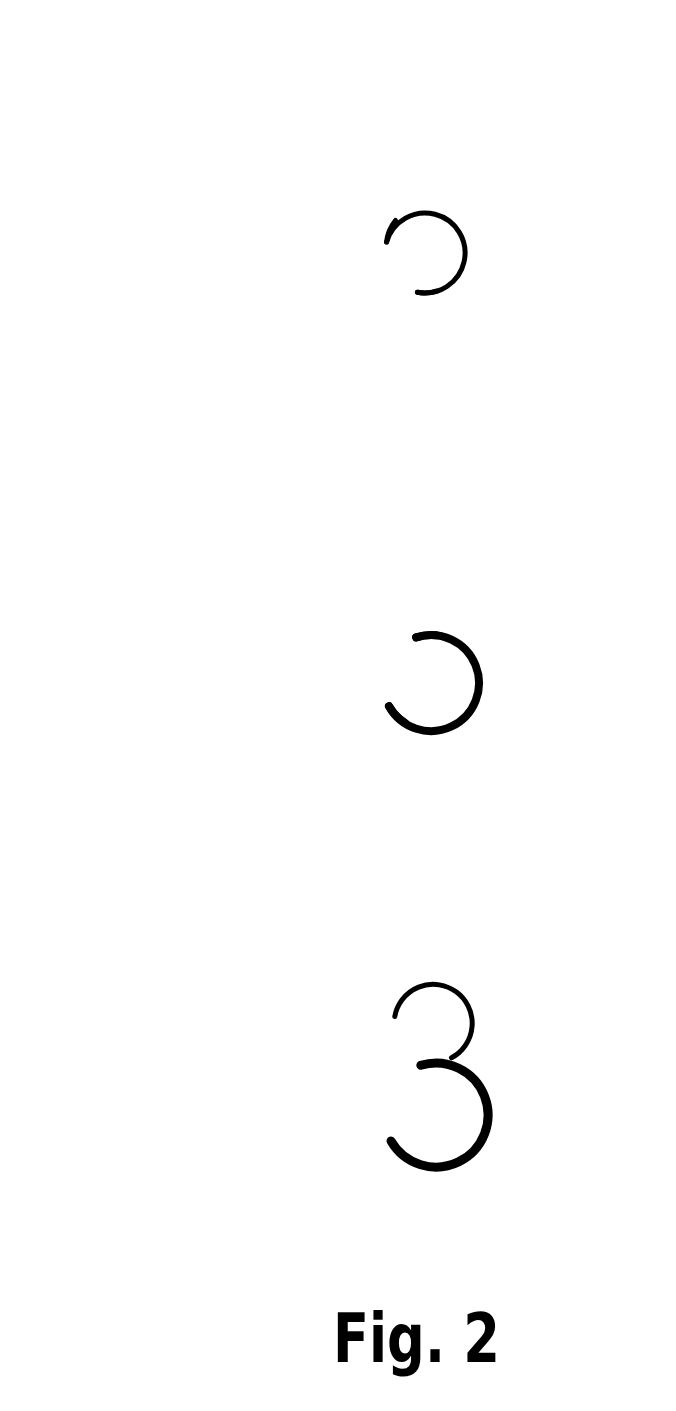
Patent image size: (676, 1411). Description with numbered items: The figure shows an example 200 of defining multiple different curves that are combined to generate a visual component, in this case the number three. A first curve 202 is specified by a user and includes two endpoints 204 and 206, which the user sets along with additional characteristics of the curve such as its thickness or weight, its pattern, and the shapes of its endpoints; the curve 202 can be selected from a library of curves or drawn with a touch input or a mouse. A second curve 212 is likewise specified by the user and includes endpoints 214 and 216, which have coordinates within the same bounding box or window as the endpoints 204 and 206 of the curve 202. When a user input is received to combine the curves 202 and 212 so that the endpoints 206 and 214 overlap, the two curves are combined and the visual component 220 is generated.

The example 200 is at (88, 30).
The curve 202 is at (450, 220).
The endpoint 204 is at (387, 242).
The endpoint 206 is at (417, 295).
The curve 212 is at (483, 665).
The endpoint 214 is at (415, 633).
The endpoint 216 is at (385, 708).
The visual component 220 is at (482, 993).